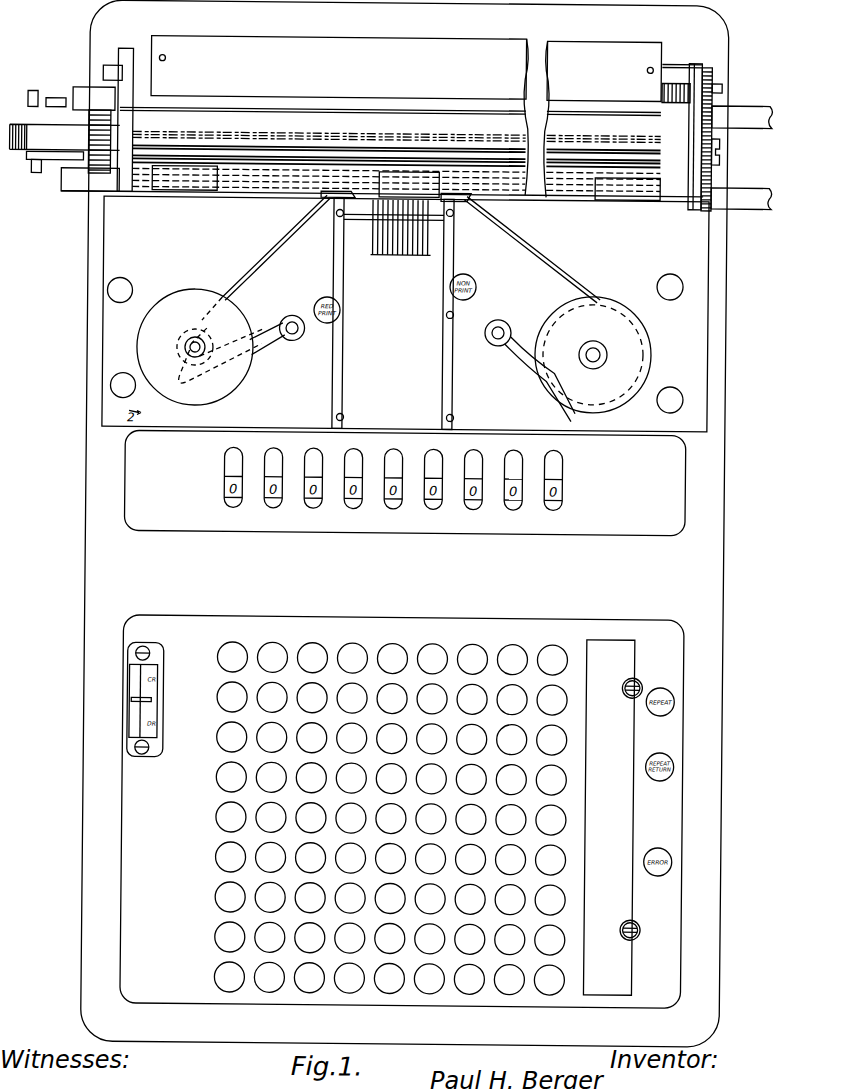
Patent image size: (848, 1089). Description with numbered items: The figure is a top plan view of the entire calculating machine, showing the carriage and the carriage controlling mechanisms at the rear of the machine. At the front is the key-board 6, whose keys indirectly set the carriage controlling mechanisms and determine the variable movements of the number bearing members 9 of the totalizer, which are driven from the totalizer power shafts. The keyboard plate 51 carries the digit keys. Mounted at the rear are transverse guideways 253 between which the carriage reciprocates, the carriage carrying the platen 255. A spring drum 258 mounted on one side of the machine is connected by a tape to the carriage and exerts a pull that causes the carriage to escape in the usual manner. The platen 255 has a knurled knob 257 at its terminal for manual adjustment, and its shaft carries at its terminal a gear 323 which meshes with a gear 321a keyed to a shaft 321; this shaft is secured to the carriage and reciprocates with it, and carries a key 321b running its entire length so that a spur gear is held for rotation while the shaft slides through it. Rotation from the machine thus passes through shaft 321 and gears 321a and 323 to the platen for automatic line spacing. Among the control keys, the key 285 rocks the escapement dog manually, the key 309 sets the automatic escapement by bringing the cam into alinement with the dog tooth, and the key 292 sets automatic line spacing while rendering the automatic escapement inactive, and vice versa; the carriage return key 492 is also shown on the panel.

The key-board 6 is at (390, 642).
The number bearing members 9 is at (347, 482).
The keyboard plate 51 is at (136, 916).
The platen 255 is at (414, 123).
The knurled knob 257 is at (97, 166).
The spring drum 258 is at (29, 137).
The key 285 is at (109, 388).
The key 292 is at (670, 385).
The key 309 is at (106, 286).
The shaft 321 is at (696, 69).
The gear 321a is at (710, 69).
The key 321b is at (716, 80).
The transverse guideways 253 is at (755, 105).
The gear 323 is at (709, 170).
The carriage return key 492 is at (671, 271).